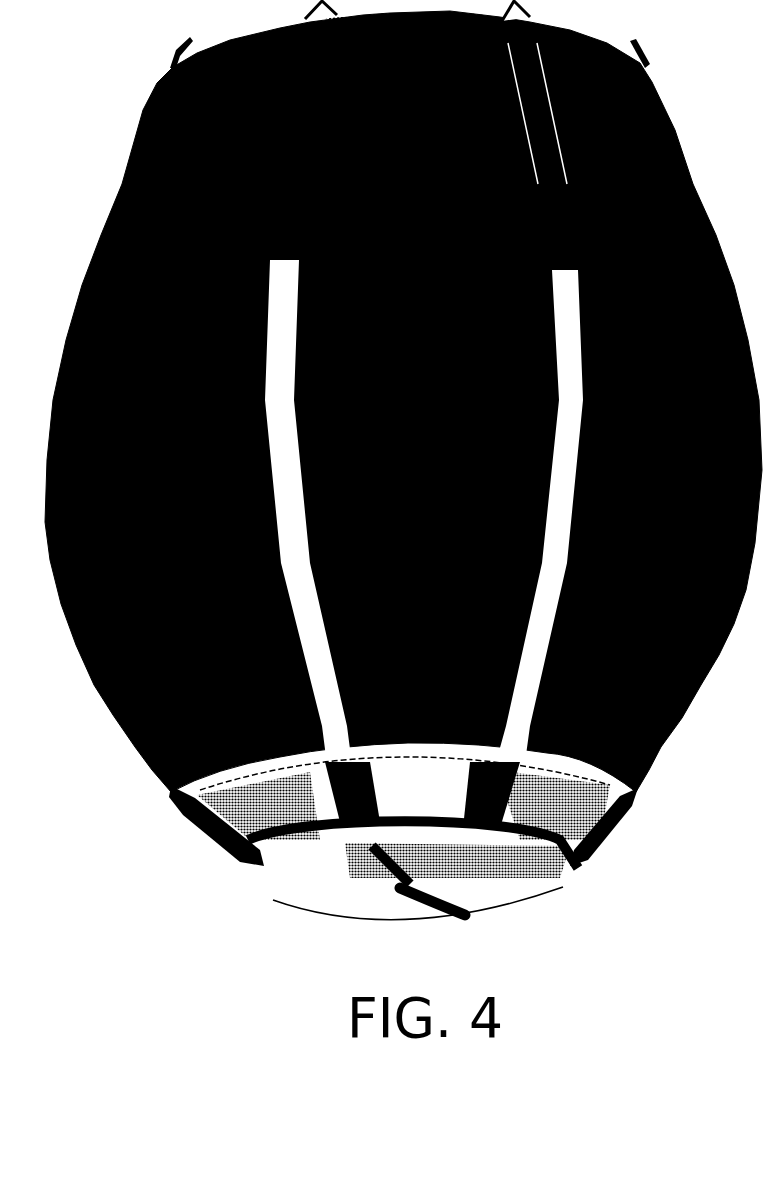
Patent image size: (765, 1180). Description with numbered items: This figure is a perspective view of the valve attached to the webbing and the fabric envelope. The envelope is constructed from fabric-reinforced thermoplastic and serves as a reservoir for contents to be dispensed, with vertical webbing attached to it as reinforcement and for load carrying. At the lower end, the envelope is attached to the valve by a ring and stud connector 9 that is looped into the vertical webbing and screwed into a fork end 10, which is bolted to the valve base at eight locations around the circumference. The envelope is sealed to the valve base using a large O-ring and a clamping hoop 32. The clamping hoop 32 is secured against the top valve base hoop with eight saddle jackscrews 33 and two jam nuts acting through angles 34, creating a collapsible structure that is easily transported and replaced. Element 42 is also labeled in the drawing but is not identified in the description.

The ring and stud connector 9 is at (601, 848).
The fork end 10 is at (478, 806).
The clamping hoop 32 is at (403, 754).
The saddle jackscrews 33 is at (224, 790).
The angles 34 is at (345, 782).
The strap connector 42 is at (360, 845).